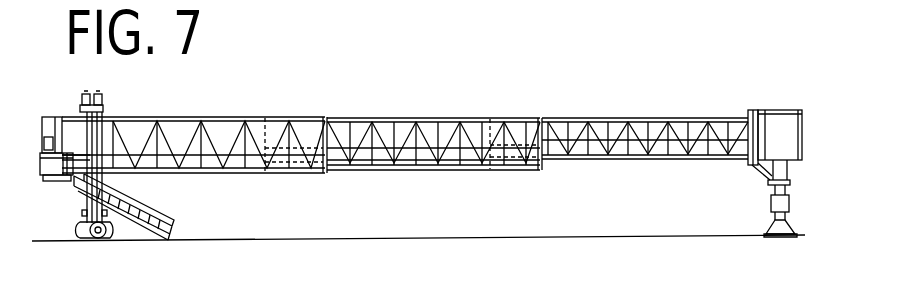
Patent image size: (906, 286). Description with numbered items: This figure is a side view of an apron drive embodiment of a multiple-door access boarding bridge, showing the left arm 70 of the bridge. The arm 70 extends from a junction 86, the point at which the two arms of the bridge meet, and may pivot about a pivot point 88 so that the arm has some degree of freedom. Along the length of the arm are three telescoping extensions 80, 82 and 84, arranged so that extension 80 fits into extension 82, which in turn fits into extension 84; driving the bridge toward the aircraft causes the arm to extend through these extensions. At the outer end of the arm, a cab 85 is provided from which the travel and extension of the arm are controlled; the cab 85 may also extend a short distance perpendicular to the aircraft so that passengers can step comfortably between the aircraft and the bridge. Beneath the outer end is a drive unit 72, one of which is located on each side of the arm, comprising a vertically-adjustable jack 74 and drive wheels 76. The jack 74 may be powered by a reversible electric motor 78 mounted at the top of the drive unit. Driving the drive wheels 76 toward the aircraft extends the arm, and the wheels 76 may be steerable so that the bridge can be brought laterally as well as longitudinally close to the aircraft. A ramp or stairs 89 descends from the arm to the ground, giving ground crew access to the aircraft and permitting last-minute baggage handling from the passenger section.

The left arm 70 is at (352, 102).
The drive unit 72 is at (80, 203).
The vertically-adjustable jack 74 is at (92, 204).
The drive wheels 76 is at (73, 232).
The reversible electric motor 78 is at (103, 94).
The extension 80 is at (610, 121).
The extension 82 is at (467, 121).
The extension 84 is at (247, 117).
The cab 85 is at (47, 125).
The junction 86 is at (752, 118).
The pivot point 88 is at (770, 110).
The ramp or stairs 89 is at (150, 211).